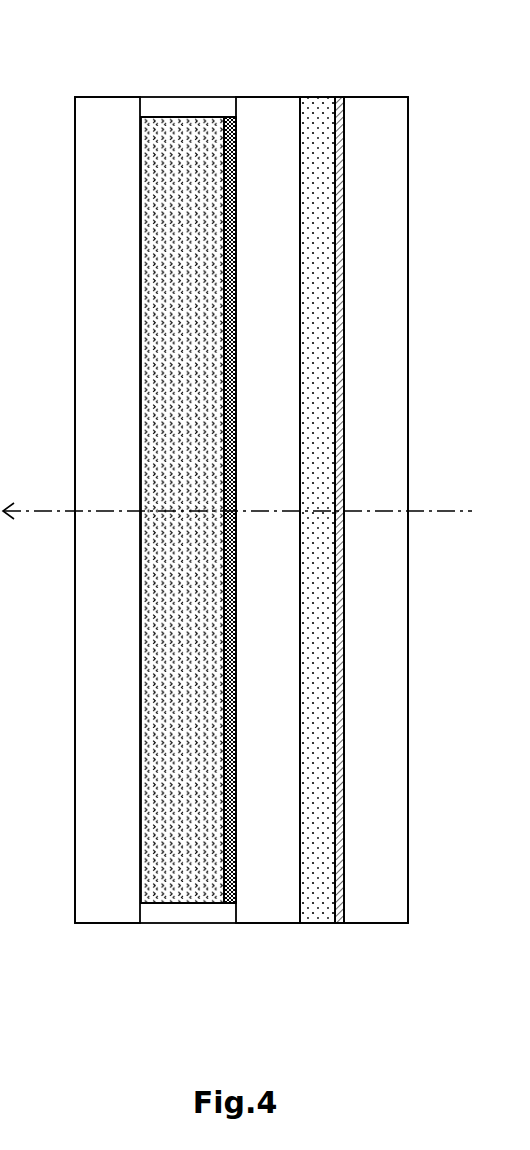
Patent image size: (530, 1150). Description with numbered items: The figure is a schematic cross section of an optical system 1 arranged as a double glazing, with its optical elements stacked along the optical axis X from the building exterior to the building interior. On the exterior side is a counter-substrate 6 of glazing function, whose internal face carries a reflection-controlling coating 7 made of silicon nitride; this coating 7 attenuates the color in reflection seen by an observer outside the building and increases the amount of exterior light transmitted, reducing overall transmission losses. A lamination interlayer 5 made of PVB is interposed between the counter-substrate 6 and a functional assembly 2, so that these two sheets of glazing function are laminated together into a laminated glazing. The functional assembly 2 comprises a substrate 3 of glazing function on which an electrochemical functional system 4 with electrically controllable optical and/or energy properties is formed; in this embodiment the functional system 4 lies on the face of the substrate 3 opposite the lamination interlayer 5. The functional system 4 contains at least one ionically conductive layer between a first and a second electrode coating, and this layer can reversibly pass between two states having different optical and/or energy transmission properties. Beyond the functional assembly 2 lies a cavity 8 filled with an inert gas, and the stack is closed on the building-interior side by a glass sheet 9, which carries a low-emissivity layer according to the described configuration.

The optical system 1 is at (114, 64).
The functional assembly 2 is at (140, 1005).
The substrate 3 is at (267, 887).
The electrochemical functional system 4 is at (223, 904).
The lamination interlayer 5 is at (320, 892).
The counter-substrate 6 is at (383, 315).
The reflection-controlling coating 7 is at (340, 97).
The cavity 8 is at (180, 840).
The glass sheet 9 is at (108, 834).